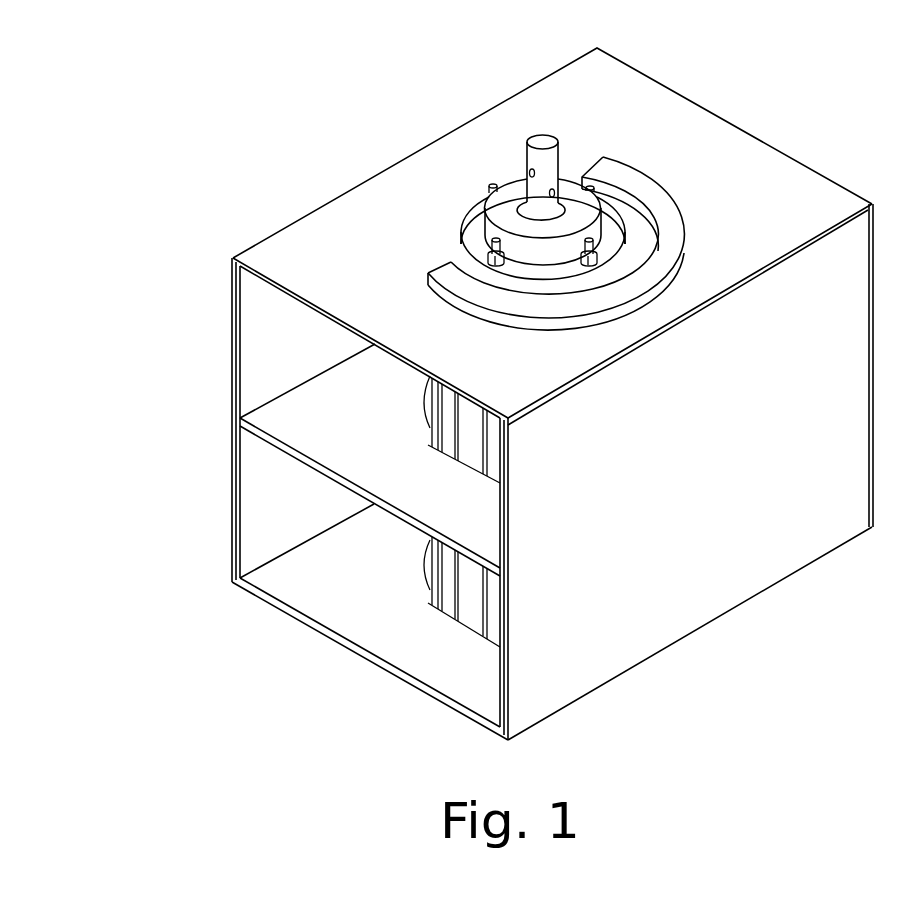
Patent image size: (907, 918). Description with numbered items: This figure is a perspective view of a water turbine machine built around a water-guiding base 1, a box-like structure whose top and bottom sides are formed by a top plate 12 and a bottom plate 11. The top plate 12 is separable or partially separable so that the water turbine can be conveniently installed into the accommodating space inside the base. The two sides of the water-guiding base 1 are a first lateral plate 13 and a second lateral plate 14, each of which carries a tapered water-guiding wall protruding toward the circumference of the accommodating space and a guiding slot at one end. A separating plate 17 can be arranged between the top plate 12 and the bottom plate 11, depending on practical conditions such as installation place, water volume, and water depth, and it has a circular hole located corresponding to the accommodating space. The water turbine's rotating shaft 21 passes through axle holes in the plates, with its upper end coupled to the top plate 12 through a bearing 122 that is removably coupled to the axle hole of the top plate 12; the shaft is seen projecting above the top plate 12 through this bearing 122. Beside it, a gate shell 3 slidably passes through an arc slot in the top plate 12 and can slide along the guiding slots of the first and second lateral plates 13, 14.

The water-guiding base 1 is at (223, 488).
The bottom plate 11 is at (387, 640).
The top plate 12 is at (772, 192).
The first lateral plate 13 is at (237, 348).
The second lateral plate 14 is at (655, 628).
The separating plate 17 is at (277, 417).
The rotating shaft 21 is at (542, 138).
The gate shell 3 is at (628, 185).
The bearing 122 is at (480, 227).